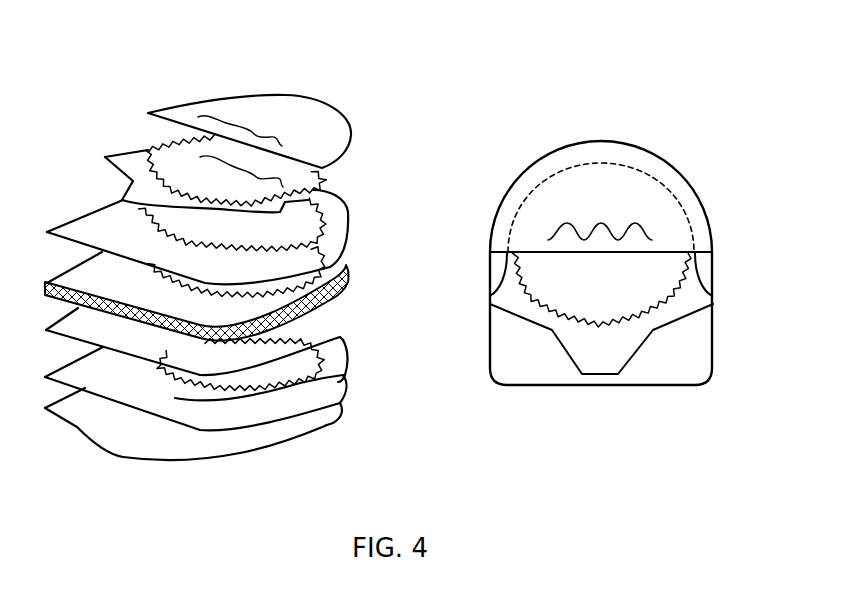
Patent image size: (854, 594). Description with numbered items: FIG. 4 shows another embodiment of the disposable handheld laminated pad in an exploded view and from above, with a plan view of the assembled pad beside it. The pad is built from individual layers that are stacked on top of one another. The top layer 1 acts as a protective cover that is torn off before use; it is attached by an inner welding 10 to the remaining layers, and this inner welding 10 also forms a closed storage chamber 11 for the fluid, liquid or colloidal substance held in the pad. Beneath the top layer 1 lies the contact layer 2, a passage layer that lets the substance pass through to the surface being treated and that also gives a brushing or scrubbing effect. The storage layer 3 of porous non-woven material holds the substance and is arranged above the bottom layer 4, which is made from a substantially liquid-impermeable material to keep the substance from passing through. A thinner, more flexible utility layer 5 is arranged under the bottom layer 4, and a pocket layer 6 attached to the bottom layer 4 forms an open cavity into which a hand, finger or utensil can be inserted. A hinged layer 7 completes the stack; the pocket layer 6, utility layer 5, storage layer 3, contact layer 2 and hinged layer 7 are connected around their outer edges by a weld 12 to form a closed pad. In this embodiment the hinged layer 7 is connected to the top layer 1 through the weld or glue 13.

The top layer 1 is at (313, 175).
The contact layer 2 is at (338, 204).
The storage layer 3 is at (330, 258).
The bottom layer 4 is at (343, 285).
The utility layer 5 is at (340, 347).
The pocket layer 6 is at (340, 393).
The hinged layer 7 is at (330, 127).
The inner welding 10 is at (140, 153).
The storage chamber 11 is at (226, 382).
The weld 12 is at (610, 141).
The weld or glue 13 is at (260, 170).